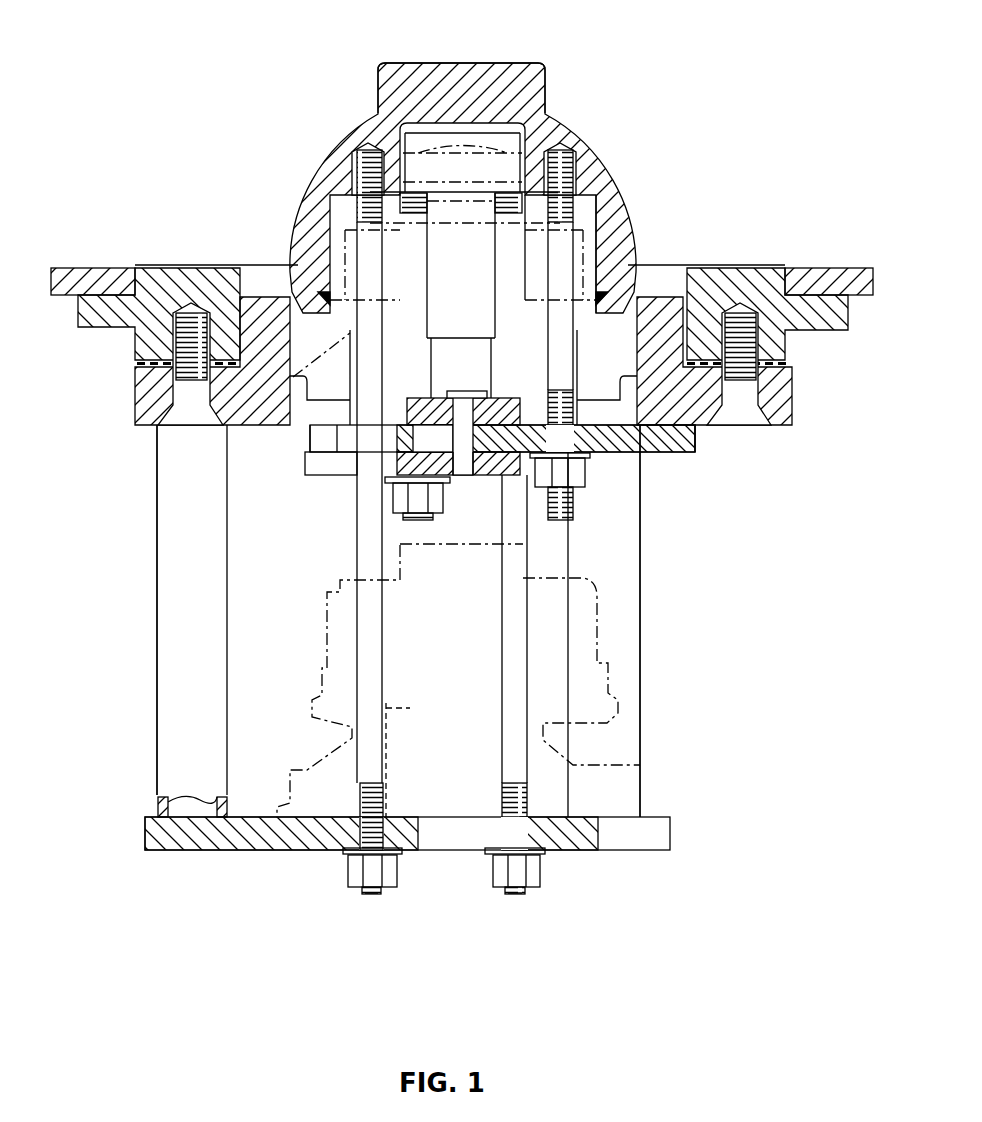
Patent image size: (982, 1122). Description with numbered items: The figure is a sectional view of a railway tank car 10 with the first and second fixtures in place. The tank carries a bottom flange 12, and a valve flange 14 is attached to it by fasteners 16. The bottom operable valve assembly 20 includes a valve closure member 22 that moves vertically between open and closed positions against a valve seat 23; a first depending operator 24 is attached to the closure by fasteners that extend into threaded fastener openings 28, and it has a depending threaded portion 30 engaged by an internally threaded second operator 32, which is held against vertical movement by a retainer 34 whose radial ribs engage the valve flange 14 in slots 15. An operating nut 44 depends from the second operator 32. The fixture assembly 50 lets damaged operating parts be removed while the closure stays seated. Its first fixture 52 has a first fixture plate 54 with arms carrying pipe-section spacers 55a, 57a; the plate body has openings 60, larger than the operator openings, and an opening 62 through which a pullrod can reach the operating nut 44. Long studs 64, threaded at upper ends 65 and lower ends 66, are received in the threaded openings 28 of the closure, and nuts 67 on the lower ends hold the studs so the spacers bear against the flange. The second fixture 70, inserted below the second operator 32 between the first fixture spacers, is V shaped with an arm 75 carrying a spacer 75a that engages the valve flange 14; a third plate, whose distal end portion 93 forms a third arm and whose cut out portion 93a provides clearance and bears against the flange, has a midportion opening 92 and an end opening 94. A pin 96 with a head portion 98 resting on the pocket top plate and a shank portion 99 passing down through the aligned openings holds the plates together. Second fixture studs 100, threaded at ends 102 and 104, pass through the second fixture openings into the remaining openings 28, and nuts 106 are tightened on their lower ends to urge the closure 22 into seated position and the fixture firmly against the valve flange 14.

The railway tank car 10 is at (85, 280).
The bottom flange 12 is at (178, 280).
The valve flange 14 is at (775, 393).
The slots 15 is at (268, 405).
The fasteners 16 is at (190, 415).
The bottom operable valve assembly 20 is at (603, 147).
The valve closure member 22 is at (455, 78).
The valve seat 23 is at (632, 281).
The first depending operator 24 is at (592, 239).
The threaded fastener openings 28 is at (557, 150).
The depending threaded portion 30 is at (472, 258).
The second operator 32 is at (398, 250).
The retainer 34 is at (307, 405).
The operating nut 44 is at (406, 760).
The fixture assembly 50 is at (648, 675).
The first fixture 52 is at (130, 787).
The first fixture plate 54 is at (212, 846).
The spacer 55a is at (625, 629).
The spacer 57a is at (172, 633).
The openings 60 is at (352, 849).
The opening 62 is at (520, 831).
The long studs 64 is at (368, 689).
The threads 65 is at (358, 166).
The lower end 66 is at (515, 894).
The nuts 67 is at (500, 868).
The second fixture 70 is at (343, 533).
The arm 75 is at (345, 470).
The spacer 75a is at (330, 441).
The opening 92 is at (520, 463).
The distal end portion 93 is at (592, 453).
The cut out portion 93a is at (697, 433).
The opening 94 is at (500, 478).
The pin 96 is at (478, 390).
The head portion 98 is at (466, 395).
The shank portion 99 is at (465, 456).
The second fixture studs 100 is at (563, 347).
The threaded end 102 is at (588, 197).
The threaded end 104 is at (574, 509).
The nuts 106 is at (412, 501).